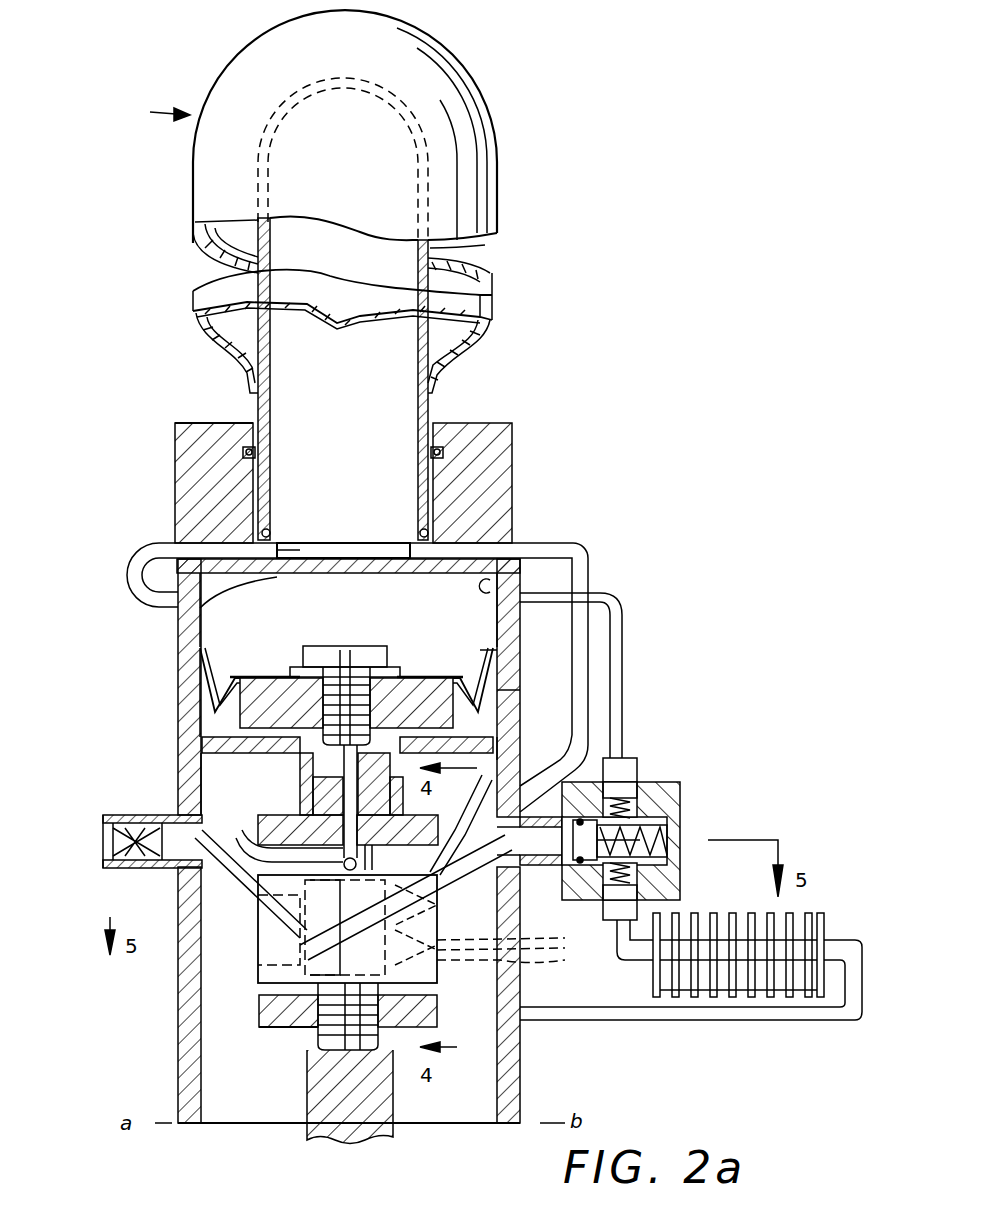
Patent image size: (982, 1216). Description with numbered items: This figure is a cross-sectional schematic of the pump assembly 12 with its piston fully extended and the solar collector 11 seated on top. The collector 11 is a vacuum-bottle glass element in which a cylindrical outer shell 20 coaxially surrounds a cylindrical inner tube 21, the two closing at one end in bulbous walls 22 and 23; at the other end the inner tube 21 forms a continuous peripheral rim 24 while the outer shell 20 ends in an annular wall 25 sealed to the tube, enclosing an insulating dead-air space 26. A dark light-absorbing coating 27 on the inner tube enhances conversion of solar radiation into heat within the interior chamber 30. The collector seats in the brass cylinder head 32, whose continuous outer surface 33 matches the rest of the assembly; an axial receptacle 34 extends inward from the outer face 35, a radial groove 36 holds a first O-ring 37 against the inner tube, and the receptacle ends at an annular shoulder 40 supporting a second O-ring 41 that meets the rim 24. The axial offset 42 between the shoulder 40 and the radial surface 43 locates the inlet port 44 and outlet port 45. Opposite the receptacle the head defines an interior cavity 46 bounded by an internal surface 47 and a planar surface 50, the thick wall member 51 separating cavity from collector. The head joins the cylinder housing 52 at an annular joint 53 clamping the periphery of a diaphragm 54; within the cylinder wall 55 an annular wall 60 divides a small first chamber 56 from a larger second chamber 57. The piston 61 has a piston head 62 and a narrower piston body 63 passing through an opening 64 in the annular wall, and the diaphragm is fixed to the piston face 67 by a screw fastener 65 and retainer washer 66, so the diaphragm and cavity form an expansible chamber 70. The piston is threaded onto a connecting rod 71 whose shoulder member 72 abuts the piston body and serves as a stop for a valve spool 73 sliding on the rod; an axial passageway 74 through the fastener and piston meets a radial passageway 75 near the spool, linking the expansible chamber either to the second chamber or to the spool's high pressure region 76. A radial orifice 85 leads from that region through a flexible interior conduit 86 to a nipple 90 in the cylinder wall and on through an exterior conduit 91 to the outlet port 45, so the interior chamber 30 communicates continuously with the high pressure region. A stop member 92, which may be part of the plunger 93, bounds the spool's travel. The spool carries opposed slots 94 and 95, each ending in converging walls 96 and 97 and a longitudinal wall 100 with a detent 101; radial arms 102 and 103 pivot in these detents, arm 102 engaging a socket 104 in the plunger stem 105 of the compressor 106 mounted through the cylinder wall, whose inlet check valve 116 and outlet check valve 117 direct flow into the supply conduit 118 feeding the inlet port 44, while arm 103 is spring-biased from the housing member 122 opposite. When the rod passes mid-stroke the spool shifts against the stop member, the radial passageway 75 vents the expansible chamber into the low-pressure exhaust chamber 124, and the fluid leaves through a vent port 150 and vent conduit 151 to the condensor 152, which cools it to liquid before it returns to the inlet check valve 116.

The solar collector 11 is at (151, 106).
The pump assembly 12 is at (160, 721).
The cylindrical outer shell 20 is at (497, 208).
The cylindrical inner tube 21 is at (432, 248).
The bulbous wall 22 is at (455, 60).
The bulbous wall 23 is at (302, 85).
The continuous peripheral rim 24 is at (267, 523).
The annular wall 25 is at (193, 320).
The dead-air space 26 is at (228, 90).
The light-absorbing coating 27 is at (272, 355).
The interior chamber 30 is at (349, 262).
The cylinder head 32 is at (217, 422).
The continuous outer surface 33 is at (175, 438).
The axial receptacle 34 is at (258, 452).
The outer face 35 is at (457, 420).
The radial groove 36 is at (477, 420).
The first O-ring 37 is at (445, 453).
The annular shoulder 40 is at (287, 543).
The second O-ring 41 is at (277, 533).
The axial offset 42 is at (287, 550).
The radial surface 43 is at (367, 553).
The inlet port 44 is at (200, 547).
The outlet port 45 is at (535, 543).
The interior cavity 46 is at (173, 606).
The internal surface 47 is at (517, 592).
The planar surface 50 is at (210, 595).
The wall member 51 is at (278, 567).
The cylinder housing 52 is at (523, 657).
The annular joint 53 is at (193, 647).
The diaphragm 54 is at (477, 640).
The cylinder wall 55 is at (510, 693).
The first chamber 56 is at (213, 725).
The second chamber 57 is at (210, 788).
The annular wall 60 is at (248, 748).
The piston 61 is at (440, 720).
The piston head 62 is at (408, 693).
The piston body 63 is at (440, 760).
The opening 64 is at (297, 740).
The screw fastener 65 is at (353, 647).
The retainer washer 66 is at (297, 673).
The piston face 67 is at (282, 677).
The expansible chamber 70 is at (399, 597).
The connecting rod 71 is at (260, 848).
The shoulder member 72 is at (270, 812).
The valve spool 73 is at (262, 947).
The axial passageway 74 is at (360, 820).
The radial passageway 75 is at (267, 867).
The high pressure region 76 is at (343, 950).
The radial orifice 85 is at (290, 967).
The flexible interior conduit 86 is at (273, 938).
The nipple 90 is at (590, 737).
The exterior conduit 91 is at (590, 565).
The stop member 92 is at (263, 1013).
The plunger 93 is at (327, 1117).
The slot 94 is at (575, 980).
The slot 95 is at (257, 920).
The angularly converging wall 96 is at (440, 963).
The angularly converging wall 97 is at (443, 907).
The longitudinal wall 100 is at (555, 968).
The detent 101 is at (540, 945).
The radial arm 102 is at (565, 860).
The radial arm 103 is at (172, 913).
The socket 104 is at (507, 838).
The plunger stem 105 is at (611, 940).
The compressor 106 is at (680, 860).
The inlet check valve 116 is at (637, 903).
The outlet check valve 117 is at (637, 760).
The supply conduit 118 is at (623, 620).
The housing member 122 is at (155, 877).
The exhaust chamber 124 is at (447, 1097).
The vent port 150 is at (540, 1043).
The vent conduit 151 is at (783, 1020).
The condensor 152 is at (825, 915).